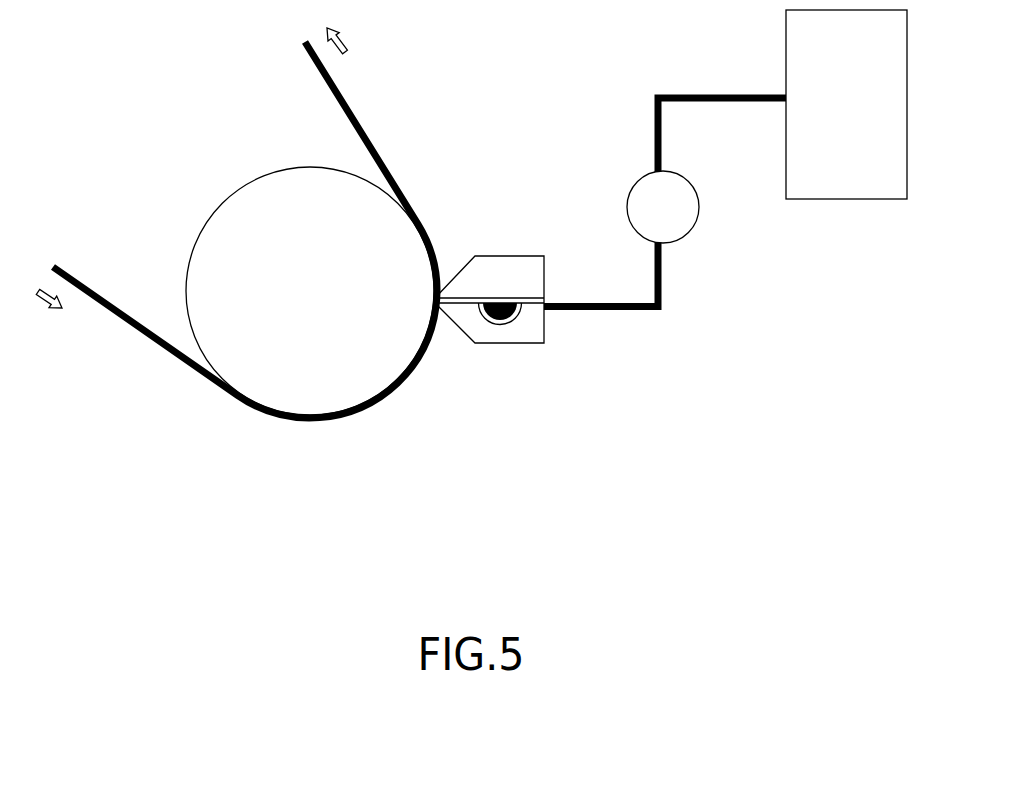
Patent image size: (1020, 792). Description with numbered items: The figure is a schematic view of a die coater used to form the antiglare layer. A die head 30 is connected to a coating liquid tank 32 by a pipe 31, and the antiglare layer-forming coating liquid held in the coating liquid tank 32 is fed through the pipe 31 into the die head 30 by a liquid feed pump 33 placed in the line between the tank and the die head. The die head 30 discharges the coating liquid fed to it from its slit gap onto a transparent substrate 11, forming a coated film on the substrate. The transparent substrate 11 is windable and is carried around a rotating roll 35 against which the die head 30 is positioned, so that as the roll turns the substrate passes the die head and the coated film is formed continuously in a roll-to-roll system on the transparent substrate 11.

The transparent substrate 11 is at (147, 333).
The die head 30 is at (520, 330).
The pipe 31 is at (662, 294).
The coating liquid tank 32 is at (835, 155).
The liquid feed pump 33 is at (640, 220).
The rotating roll 35 is at (308, 358).